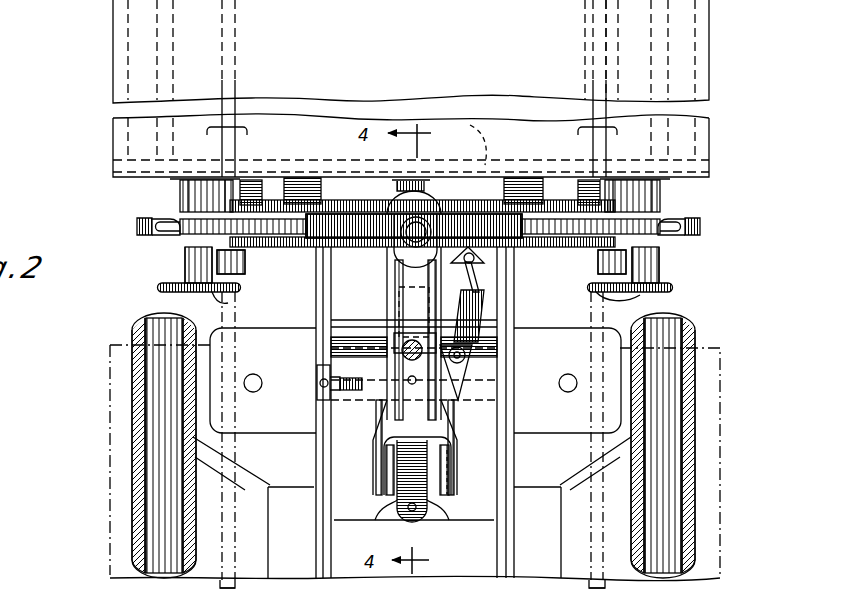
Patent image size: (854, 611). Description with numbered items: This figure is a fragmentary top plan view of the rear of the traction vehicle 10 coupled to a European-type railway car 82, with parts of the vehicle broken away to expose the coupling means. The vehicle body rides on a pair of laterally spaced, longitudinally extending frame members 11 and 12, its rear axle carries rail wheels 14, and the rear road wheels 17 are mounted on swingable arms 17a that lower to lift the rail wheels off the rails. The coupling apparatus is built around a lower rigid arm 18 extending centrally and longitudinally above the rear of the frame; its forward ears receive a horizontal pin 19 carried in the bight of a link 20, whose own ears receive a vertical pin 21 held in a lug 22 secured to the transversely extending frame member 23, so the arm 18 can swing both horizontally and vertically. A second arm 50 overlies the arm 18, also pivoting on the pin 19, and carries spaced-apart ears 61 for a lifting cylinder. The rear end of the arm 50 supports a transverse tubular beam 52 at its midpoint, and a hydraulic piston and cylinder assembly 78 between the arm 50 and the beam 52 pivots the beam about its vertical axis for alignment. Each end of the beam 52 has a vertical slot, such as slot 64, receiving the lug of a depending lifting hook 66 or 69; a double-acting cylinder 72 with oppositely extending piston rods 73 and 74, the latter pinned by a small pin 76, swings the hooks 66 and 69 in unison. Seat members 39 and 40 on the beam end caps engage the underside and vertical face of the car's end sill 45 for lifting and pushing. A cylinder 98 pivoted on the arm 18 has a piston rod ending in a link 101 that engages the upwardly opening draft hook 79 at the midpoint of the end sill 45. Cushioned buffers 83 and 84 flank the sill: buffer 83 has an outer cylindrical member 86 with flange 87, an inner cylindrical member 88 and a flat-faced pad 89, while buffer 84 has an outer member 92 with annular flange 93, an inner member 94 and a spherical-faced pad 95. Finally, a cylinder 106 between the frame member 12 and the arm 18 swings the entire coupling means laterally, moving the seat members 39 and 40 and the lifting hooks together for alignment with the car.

The traction vehicle 10 is at (105, 422).
The frame member 11 is at (512, 310).
The frame member 12 is at (320, 320).
The rail wheels 14 is at (592, 112).
The road wheels 17 is at (136, 334).
The arms 17a is at (250, 484).
The lower rigid arm 18 is at (395, 460).
The horizontally extending pin 19 is at (447, 457).
The link 20 is at (402, 485).
The vertical pin 21 is at (420, 507).
The lug 22 is at (437, 517).
The transversely extending member 23 is at (378, 517).
The seat member 39 is at (312, 190).
The seat member 40 is at (515, 194).
The end sill 45 is at (737, 158).
The second arm 50 is at (430, 423).
The tubular beam 52 is at (264, 250).
The spaced-apart ears 61 is at (390, 362).
The slot 64 is at (230, 592).
The lifting hook 66 is at (137, 224).
The lifting hook 69 is at (700, 226).
The fluid pressure operated cylinder 72 is at (377, 214).
The piston rod 73 is at (252, 180).
The piston rod 74 is at (586, 180).
The small pin 76 is at (634, 600).
The hydraulic piston and cylinder assembly 78 is at (470, 305).
The draft hook 79 is at (428, 191).
The European-type railway car 82 is at (111, 86).
The cushioned buffer 83 is at (182, 262).
The cushioned buffer 84 is at (675, 287).
The outer cylindrical member 86 is at (180, 197).
The outwardly extending flange 87 is at (170, 179).
The inner cylindrical member 88 is at (160, 283).
The pad 89 is at (230, 302).
The outer cylindrical member 92 is at (655, 206).
The annular flange 93 is at (670, 181).
The inner cylindrical member 94 is at (660, 270).
The pad 95 is at (645, 292).
The fluid pressure operated cylinder 98 is at (398, 305).
The link 101 is at (396, 256).
The fluid pressure operated cylinder 106 is at (352, 398).